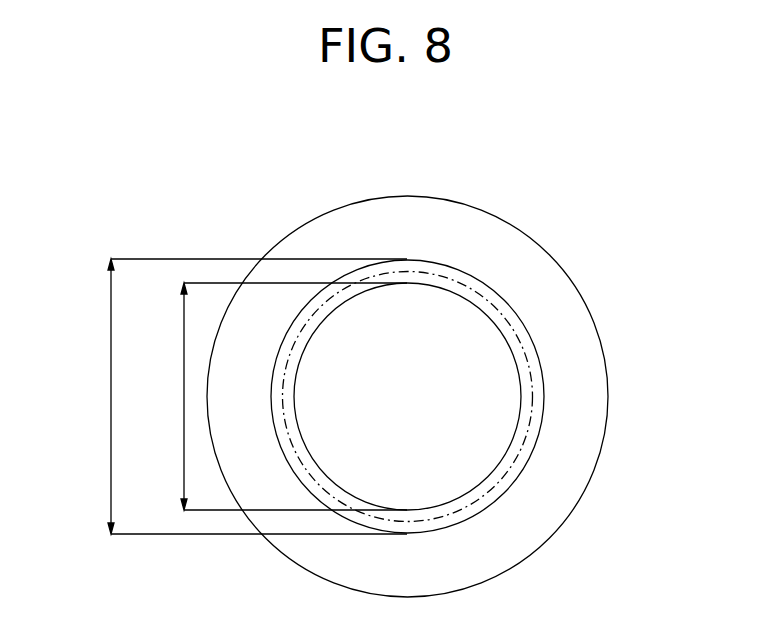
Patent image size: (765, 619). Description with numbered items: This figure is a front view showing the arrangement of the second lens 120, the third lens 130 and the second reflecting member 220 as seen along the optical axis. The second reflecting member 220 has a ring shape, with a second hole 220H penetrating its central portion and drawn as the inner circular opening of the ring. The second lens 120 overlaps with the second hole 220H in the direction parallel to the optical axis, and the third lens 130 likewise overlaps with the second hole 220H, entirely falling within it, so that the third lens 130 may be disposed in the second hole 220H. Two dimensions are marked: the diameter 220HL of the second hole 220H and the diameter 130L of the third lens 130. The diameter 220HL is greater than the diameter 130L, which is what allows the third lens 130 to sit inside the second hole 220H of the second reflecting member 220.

The second reflecting member 220 is at (589, 312).
The second hole 220H is at (533, 443).
The third lens 130 is at (529, 334).
The second lens 120 is at (530, 362).
The diameter of the second hole 220HL is at (222, 396).
The diameter of the third lens 130L is at (267, 396).